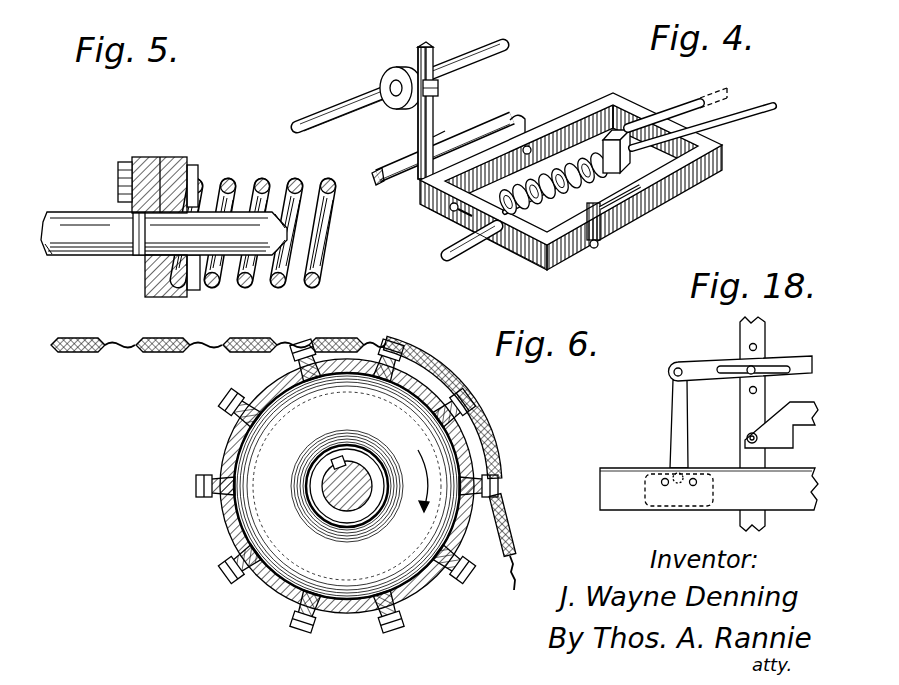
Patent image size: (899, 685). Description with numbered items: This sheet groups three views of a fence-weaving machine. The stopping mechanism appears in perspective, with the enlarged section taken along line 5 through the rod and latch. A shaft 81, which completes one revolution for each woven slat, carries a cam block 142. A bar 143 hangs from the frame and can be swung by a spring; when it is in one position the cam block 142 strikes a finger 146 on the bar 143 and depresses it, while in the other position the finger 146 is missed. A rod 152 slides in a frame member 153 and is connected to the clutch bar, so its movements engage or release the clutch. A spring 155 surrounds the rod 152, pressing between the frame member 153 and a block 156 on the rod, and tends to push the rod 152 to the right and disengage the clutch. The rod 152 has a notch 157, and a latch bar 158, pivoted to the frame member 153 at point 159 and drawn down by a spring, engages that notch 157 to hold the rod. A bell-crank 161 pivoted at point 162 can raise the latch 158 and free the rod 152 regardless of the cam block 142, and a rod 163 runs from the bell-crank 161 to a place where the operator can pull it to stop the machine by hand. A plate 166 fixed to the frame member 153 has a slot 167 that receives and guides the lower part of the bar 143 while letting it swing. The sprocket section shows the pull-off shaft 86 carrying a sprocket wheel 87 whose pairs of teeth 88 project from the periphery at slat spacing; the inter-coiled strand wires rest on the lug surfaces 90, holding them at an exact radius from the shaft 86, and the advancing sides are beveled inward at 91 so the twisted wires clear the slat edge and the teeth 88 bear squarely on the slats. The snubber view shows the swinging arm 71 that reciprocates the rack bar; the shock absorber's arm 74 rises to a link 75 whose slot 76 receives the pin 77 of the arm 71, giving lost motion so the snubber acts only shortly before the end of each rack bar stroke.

In FIG. 4, the section line 5 is at (478, 243).
In FIG. 4, the shaft 81 is at (488, 55).
In FIG. 4, the cam block 142 is at (397, 67).
In FIG. 4, the bar 143 is at (434, 110).
In FIG. 4, the finger 146 is at (421, 92).
In FIG. 5, the rod 152 is at (74, 257).
In FIG. 4, the rod 152 is at (687, 113).
In FIG. 4, the frame member 153 is at (686, 184).
In FIG. 5, the spring 155 is at (263, 182).
In FIG. 4, the spring 155 is at (582, 150).
In FIG. 4, the block 156 is at (607, 138).
In FIG. 5, the notch 157 is at (138, 257).
In FIG. 4, the latch bar 158 is at (536, 256).
In FIG. 4, the pivot point 159 is at (451, 211).
In FIG. 4, the bell-crank 161 is at (579, 249).
In FIG. 4, the pivot point 162 is at (600, 245).
In FIG. 4, the rod 163 is at (757, 118).
In FIG. 4, the plate 166 is at (405, 171).
In FIG. 4, the slot 167 is at (443, 140).
In FIG. 6, the pull-off shaft 86 is at (326, 495).
In FIG. 6, the sprocket wheel 87 is at (274, 444).
In FIG. 6, the teeth 88 is at (305, 341).
In FIG. 6, the lug surfaces 90 is at (224, 406).
In FIG. 6, the bevel 91 is at (243, 402).
In FIG. 18, the swinging arm 71 is at (768, 337).
In FIG. 18, the snubber arm 74 is at (678, 416).
In FIG. 18, the link 75 is at (705, 365).
In FIG. 18, the slot 76 is at (780, 373).
In FIG. 18, the pin 77 is at (758, 369).